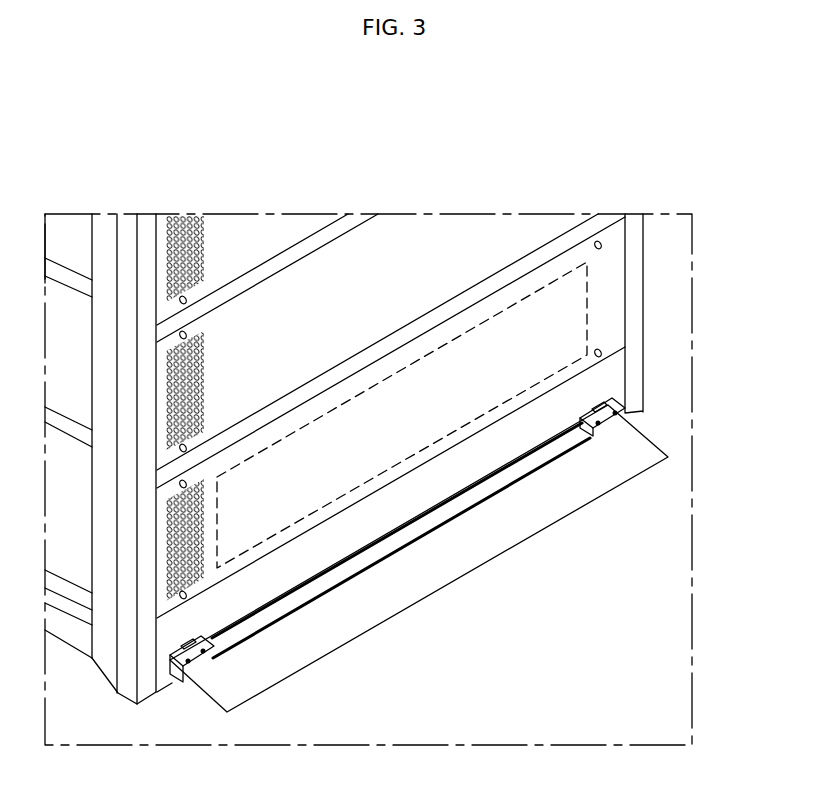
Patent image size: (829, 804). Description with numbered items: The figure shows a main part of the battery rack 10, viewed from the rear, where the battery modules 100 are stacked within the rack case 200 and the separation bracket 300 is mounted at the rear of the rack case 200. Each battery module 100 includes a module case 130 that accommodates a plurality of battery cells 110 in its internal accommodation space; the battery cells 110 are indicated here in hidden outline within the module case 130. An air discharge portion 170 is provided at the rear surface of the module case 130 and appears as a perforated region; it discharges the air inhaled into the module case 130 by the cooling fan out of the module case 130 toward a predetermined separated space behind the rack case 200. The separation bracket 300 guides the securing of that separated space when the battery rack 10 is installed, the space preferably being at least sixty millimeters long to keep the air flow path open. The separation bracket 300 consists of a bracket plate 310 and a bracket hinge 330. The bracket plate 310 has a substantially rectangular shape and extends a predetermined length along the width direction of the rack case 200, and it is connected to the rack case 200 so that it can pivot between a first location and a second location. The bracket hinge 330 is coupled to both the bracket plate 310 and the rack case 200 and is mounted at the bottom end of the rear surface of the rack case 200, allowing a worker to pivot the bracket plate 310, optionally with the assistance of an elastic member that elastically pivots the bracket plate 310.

The battery rack 10 is at (92, 140).
The battery module 100 is at (292, 208).
The battery cell 110 is at (589, 290).
The module case 130 is at (603, 318).
The air discharge portion 170 is at (184, 238).
The rack case 200 is at (103, 236).
The separation bracket 300 is at (382, 644).
The bracket plate 310 is at (430, 570).
The bracket hinge 330 is at (183, 673).